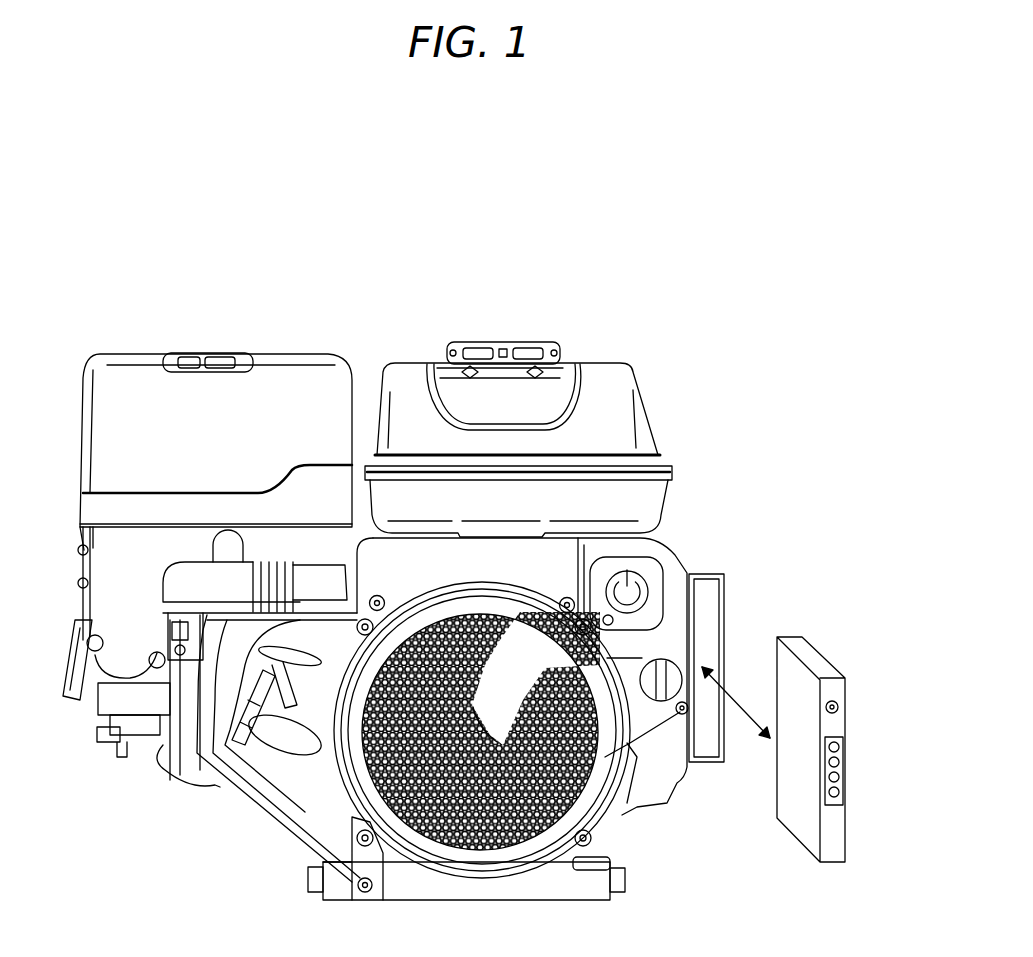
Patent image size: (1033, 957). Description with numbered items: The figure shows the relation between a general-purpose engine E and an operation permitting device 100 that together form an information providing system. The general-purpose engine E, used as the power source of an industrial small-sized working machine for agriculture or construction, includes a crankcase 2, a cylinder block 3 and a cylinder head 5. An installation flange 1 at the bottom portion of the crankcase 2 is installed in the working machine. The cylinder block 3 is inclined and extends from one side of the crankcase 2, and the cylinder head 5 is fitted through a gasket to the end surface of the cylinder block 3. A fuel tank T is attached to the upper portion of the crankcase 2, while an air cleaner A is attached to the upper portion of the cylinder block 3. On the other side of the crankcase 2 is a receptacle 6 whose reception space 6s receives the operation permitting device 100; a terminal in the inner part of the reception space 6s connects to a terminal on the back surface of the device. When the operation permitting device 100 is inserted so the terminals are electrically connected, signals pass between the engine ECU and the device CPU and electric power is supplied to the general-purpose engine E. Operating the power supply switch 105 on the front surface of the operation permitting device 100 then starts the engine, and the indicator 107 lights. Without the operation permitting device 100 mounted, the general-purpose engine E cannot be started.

The installation flange 1 is at (600, 877).
The crankcase 2 is at (292, 840).
The cylinder block 3 is at (163, 748).
The cylinder head 5 is at (92, 706).
The receptacle 6 is at (741, 707).
The reception space 6s is at (708, 597).
The operation permitting device 100 is at (861, 727).
The power supply switch 105 is at (840, 706).
The indicator 107 is at (845, 765).
The air cleaner A is at (224, 441).
The fuel tank T is at (600, 432).
The general-purpose engine E is at (674, 557).